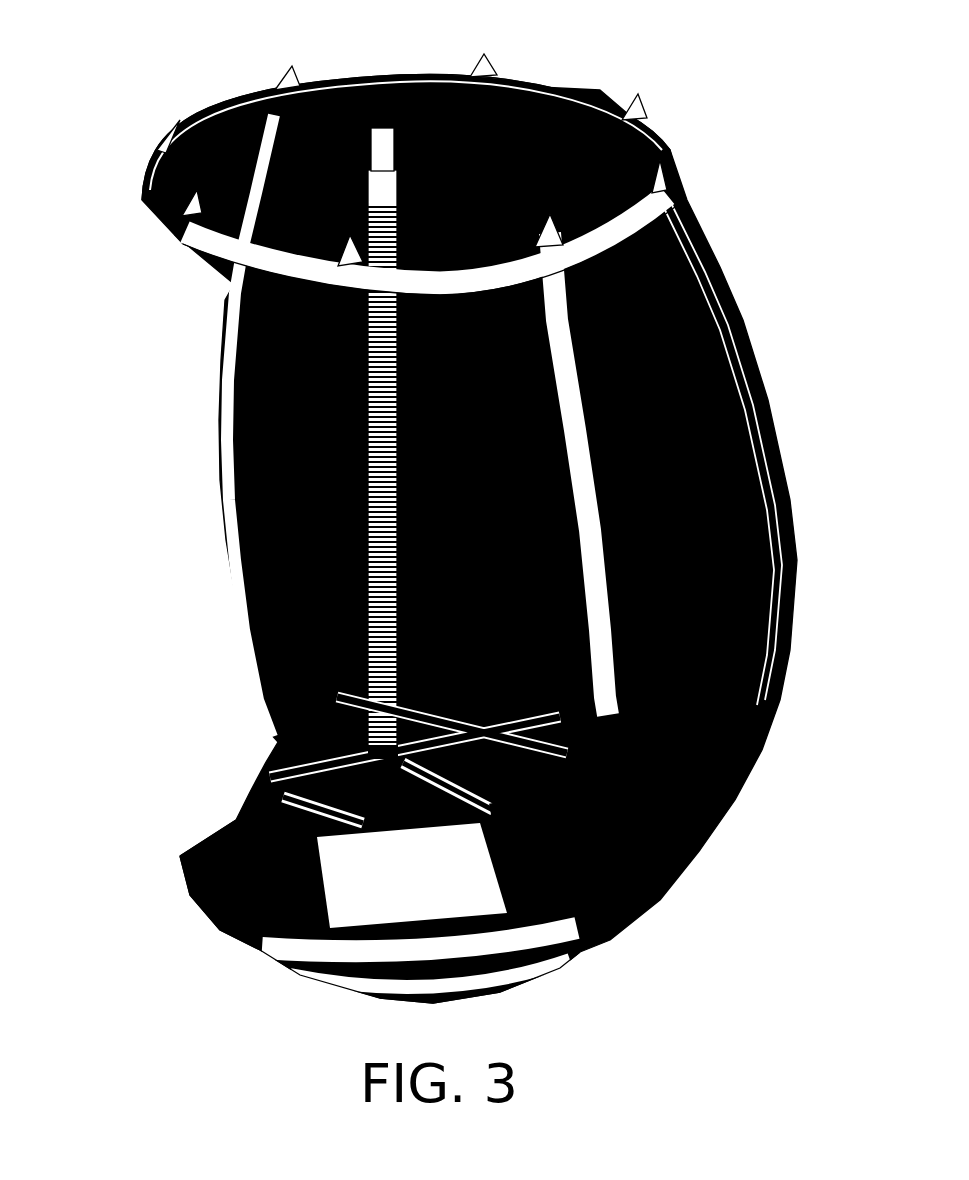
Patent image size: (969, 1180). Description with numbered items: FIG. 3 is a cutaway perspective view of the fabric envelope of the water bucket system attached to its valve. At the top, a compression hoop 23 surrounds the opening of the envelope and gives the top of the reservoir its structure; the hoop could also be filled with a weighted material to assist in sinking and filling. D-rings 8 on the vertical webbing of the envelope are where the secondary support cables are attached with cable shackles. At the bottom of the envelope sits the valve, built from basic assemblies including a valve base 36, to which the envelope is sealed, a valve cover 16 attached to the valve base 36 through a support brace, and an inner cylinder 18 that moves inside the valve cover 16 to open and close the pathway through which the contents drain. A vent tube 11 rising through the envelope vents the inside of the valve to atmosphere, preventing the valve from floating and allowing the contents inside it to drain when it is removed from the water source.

The compression hoop 23 is at (425, 93).
The D-ring 8 is at (357, 232).
The vent tube 11 is at (373, 512).
The valve cover 16 is at (347, 813).
The inner cylinder 18 is at (327, 923).
The valve base 36 is at (303, 943).